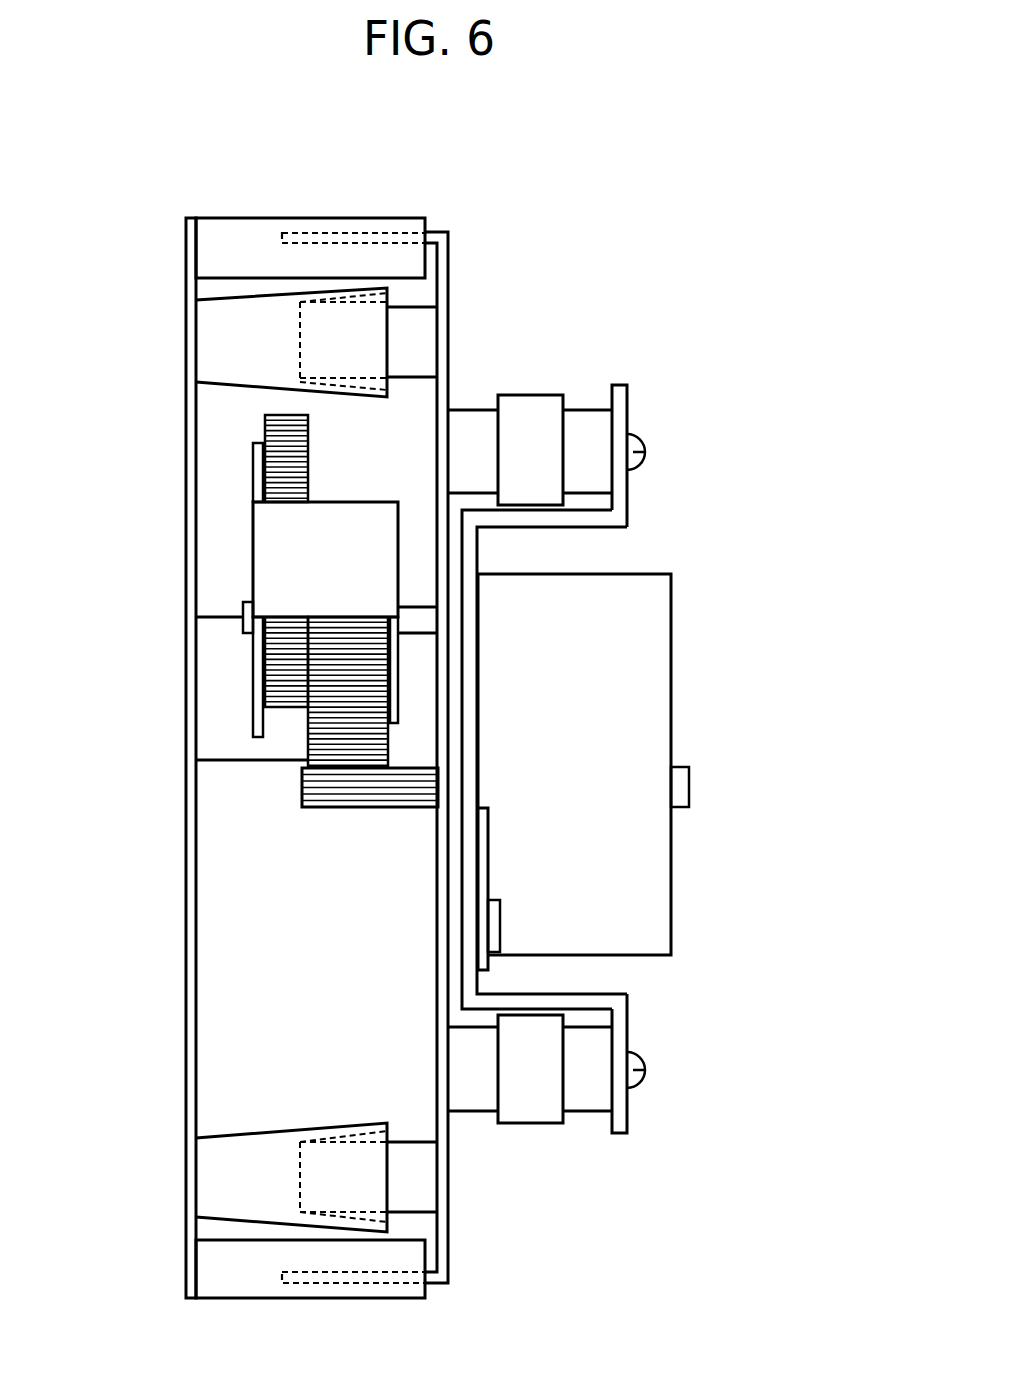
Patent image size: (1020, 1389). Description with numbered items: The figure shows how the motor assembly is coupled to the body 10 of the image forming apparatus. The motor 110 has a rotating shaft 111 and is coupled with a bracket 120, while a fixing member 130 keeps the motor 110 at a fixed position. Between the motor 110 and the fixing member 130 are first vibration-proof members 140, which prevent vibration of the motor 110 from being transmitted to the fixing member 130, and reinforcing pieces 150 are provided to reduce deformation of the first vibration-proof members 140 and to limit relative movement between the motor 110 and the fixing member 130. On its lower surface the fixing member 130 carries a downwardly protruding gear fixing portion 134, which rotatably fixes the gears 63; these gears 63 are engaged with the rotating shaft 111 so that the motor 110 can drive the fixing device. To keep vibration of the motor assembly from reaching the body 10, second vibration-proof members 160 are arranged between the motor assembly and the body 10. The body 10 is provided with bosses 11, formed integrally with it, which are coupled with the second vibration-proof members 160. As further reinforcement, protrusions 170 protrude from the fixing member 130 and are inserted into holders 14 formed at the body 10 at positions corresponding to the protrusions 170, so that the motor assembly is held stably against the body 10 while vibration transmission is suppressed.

The body 10 is at (188, 946).
The boss 11 is at (210, 346).
The holder 14 is at (210, 248).
The gears 63 is at (273, 682).
The motor 110 is at (653, 668).
The rotating shaft 111 is at (377, 793).
The bracket 120 is at (620, 413).
The fixing member 130 is at (449, 273).
The gear fixing portion 134 is at (418, 607).
The first vibration-proof member 140 is at (583, 410).
The reinforcing piece 150 is at (527, 402).
The second vibration-proof member 160 is at (412, 377).
The protrusion 170 is at (358, 233).